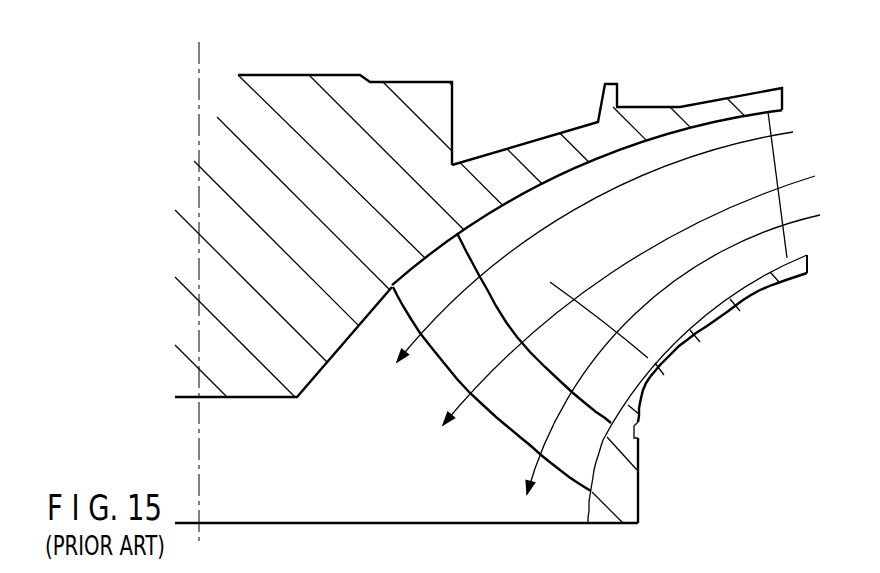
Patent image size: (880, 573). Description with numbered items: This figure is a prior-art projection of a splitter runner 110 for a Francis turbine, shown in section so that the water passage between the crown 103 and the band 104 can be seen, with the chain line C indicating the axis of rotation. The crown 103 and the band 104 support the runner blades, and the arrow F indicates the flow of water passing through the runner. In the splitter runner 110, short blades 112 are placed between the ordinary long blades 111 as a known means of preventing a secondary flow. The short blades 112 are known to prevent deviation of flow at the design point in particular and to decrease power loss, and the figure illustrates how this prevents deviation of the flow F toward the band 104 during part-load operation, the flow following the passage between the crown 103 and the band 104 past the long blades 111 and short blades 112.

The crown 103 is at (317, 354).
The splitter runner 110 is at (417, 82).
The long blades 111 is at (462, 353).
The short blades 112 is at (667, 365).
The band 104 is at (630, 482).
The axis of rotation C is at (198, 136).
The flow of water F is at (677, 290).